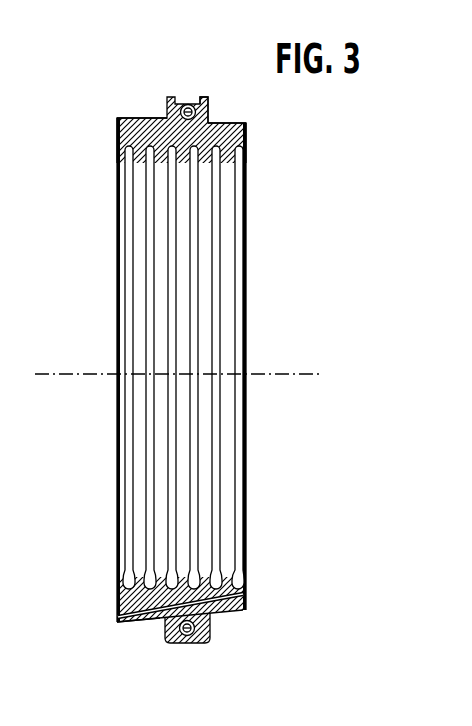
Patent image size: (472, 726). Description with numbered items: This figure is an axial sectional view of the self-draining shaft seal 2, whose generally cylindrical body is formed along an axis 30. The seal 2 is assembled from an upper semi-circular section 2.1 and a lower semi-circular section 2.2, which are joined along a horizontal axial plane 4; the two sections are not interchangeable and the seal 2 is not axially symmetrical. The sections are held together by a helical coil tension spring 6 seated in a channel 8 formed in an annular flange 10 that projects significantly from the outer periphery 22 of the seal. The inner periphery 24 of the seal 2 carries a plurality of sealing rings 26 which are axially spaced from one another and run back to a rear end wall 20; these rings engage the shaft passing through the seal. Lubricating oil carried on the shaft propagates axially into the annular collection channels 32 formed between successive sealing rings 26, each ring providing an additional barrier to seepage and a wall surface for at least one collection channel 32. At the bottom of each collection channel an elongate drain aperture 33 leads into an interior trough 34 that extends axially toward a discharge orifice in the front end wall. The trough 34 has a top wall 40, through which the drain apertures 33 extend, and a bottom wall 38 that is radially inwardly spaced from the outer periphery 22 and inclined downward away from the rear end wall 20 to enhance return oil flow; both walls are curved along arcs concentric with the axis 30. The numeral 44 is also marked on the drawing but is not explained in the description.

The self-draining shaft seal 2 is at (118, 117).
The upper semi-circular section 2.1 is at (243, 123).
The lower semi-circular section 2.2 is at (245, 613).
The horizontal axial plane 4 is at (160, 350).
The helical coil tension spring 6 is at (178, 100).
The channel 8 is at (191, 93).
The annular flange 10 is at (207, 97).
The rear end wall 20 is at (262, 431).
The outer periphery 22 is at (212, 628).
The inner periphery 24 is at (168, 257).
The sealing rings 26 is at (197, 230).
The axis 30 is at (302, 372).
The annular collection channels 32 is at (207, 202).
The drain aperture 33 is at (183, 568).
The interior trough 34 is at (117, 621).
The bottom wall 38 is at (165, 612).
The top wall 40 is at (125, 596).
The flange 44 is at (150, 118).